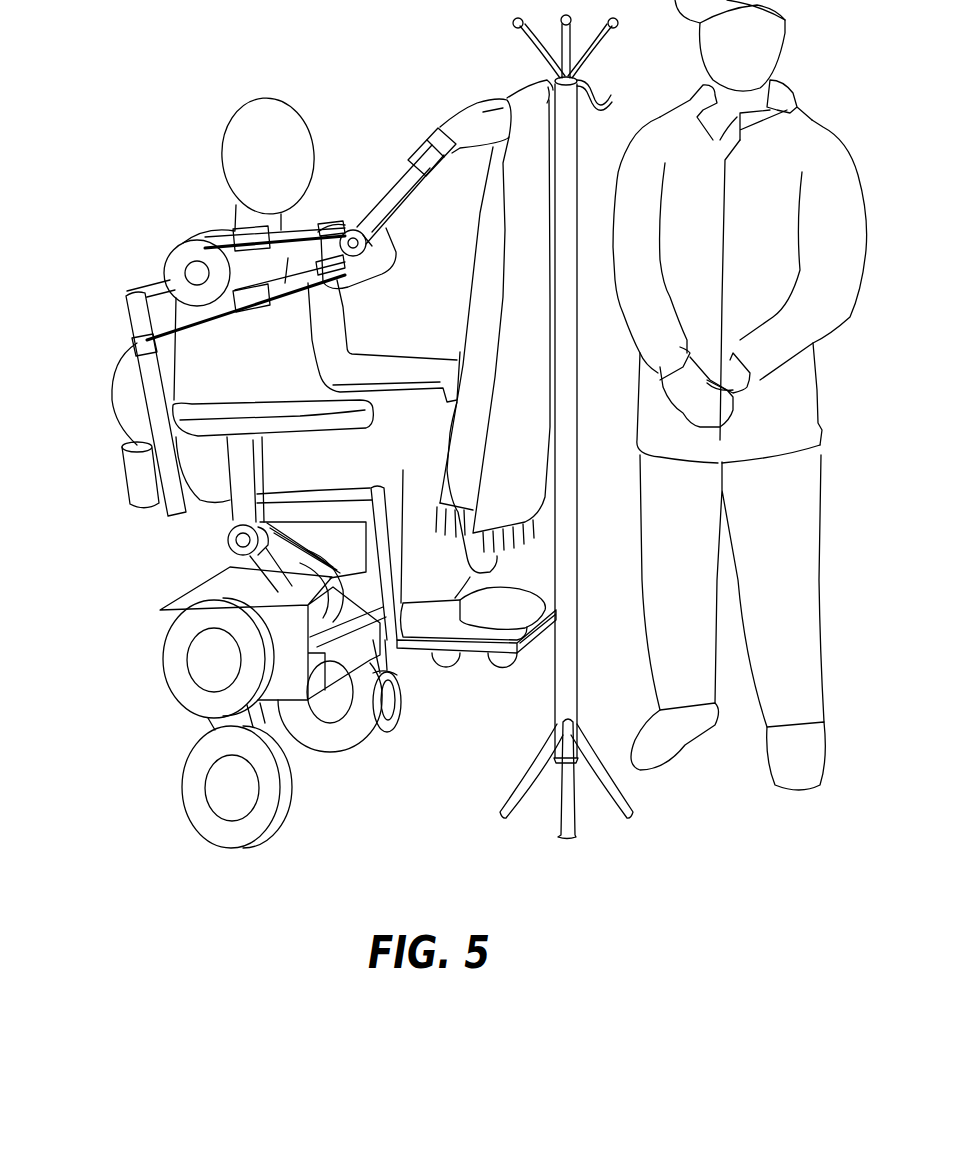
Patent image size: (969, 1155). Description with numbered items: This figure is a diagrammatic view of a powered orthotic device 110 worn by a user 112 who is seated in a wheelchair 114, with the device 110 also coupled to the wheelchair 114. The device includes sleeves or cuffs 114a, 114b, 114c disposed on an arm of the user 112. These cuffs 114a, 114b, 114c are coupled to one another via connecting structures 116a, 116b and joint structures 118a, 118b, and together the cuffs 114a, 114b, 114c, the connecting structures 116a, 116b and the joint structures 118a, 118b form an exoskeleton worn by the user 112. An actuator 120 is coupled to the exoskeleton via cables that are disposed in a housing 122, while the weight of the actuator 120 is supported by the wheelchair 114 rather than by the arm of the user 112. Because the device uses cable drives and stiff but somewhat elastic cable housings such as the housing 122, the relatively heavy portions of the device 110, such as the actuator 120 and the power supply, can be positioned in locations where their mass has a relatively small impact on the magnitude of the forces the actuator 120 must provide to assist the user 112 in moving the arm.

The orthotic device 110 is at (173, 240).
The user 112 is at (228, 106).
The wheelchair 114 is at (157, 742).
The cuff 114a is at (248, 234).
The cuff 114b is at (378, 253).
The cuff 114c is at (432, 133).
The connecting structure 116a is at (288, 300).
The connecting structure 116b is at (407, 190).
The joint structure 118a is at (163, 267).
The joint structure 118b is at (350, 230).
The actuator 120 is at (130, 487).
The housing 122 is at (130, 297).